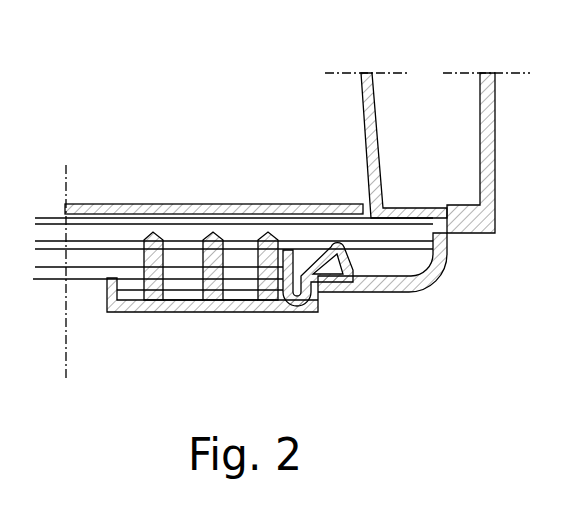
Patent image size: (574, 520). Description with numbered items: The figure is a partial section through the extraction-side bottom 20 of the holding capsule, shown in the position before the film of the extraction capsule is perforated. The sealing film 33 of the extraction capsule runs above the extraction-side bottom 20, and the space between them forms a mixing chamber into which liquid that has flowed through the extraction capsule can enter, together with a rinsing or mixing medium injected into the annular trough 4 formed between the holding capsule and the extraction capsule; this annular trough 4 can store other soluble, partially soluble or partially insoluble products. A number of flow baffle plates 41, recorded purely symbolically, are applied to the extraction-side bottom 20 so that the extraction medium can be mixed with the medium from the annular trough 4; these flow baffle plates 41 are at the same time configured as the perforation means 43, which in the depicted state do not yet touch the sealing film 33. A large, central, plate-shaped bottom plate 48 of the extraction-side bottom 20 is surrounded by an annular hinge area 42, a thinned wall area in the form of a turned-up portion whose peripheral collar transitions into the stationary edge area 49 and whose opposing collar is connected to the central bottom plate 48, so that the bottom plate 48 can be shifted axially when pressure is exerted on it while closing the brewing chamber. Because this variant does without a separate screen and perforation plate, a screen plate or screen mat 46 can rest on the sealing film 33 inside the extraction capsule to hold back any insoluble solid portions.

The annular trough 4 is at (442, 154).
The extraction-side bottom 20 is at (100, 352).
The sealing film 33 is at (253, 215).
The flow baffle plates 41 is at (215, 298).
The annular hinge area 42 is at (343, 262).
The perforation means 43 is at (272, 302).
The screen plate or screen mat 46 is at (147, 206).
The central bottom plate 48 is at (218, 302).
The stationary edge area 49 is at (420, 282).